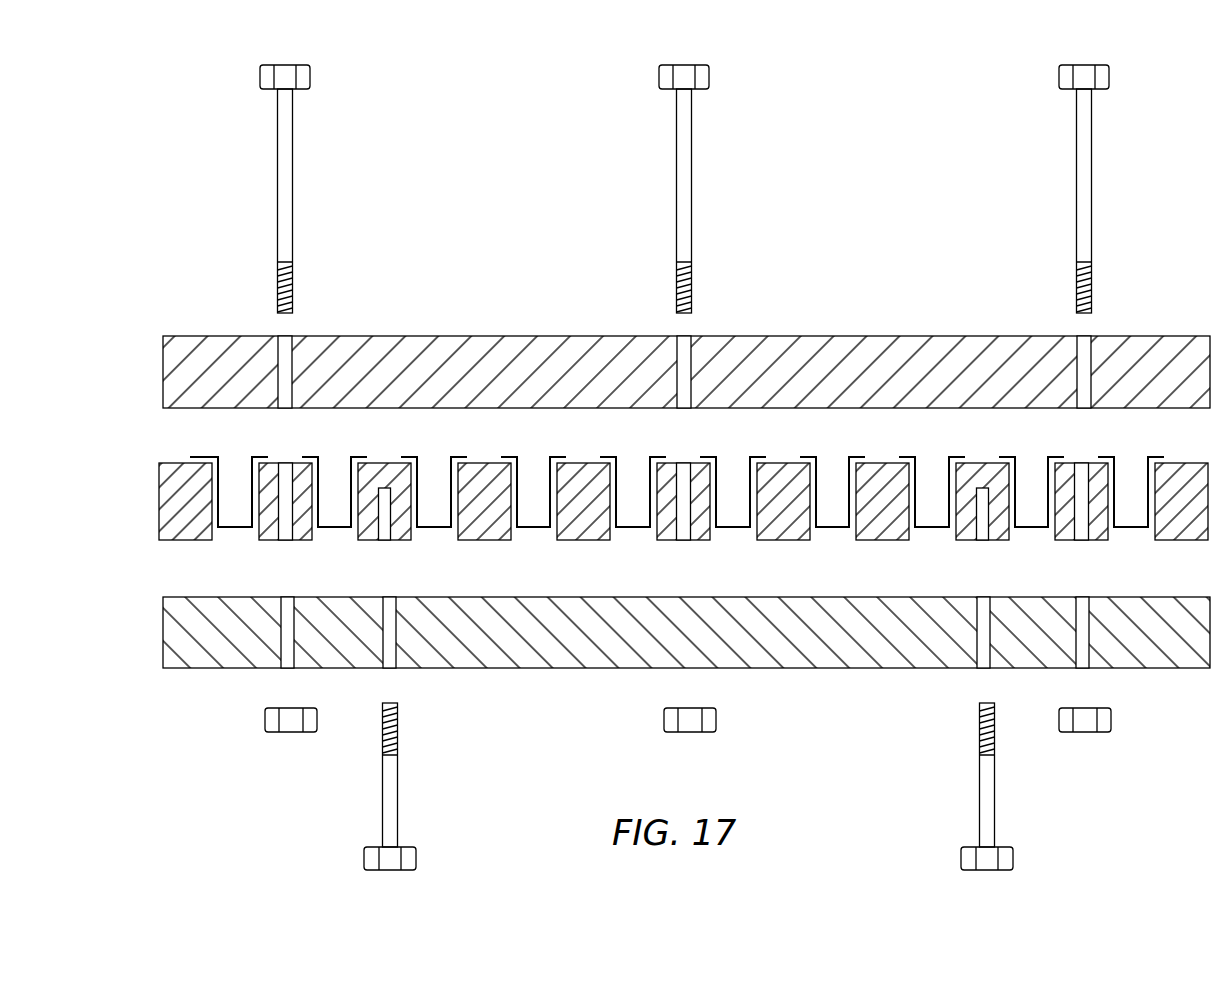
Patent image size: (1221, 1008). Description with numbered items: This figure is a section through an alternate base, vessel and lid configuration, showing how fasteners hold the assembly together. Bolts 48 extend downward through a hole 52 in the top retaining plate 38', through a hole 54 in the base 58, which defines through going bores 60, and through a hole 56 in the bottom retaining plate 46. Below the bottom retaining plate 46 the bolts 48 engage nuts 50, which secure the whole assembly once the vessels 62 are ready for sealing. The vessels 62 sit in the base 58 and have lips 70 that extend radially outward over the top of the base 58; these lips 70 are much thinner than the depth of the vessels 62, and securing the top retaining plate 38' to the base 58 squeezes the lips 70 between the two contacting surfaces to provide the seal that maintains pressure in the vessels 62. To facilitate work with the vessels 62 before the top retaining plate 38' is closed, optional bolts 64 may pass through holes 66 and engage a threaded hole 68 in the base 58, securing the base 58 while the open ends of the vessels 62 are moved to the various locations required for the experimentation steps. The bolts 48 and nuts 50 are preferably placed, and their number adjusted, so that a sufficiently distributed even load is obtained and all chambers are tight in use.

The bolt 48 is at (293, 167).
The top retaining plate 38' is at (674, 357).
The hole in top retaining plate 52 is at (290, 340).
The lip 70 is at (190, 457).
The vessel 62 is at (232, 475).
The through going bore 60 is at (208, 492).
The base 58 is at (167, 527).
The hole in base 54 is at (265, 532).
The threaded hole 68 is at (382, 505).
The bottom retaining plate 46 is at (171, 651).
The hole in bottom retaining plate 56 is at (278, 642).
The hole 66 is at (393, 650).
The nut 50 is at (265, 718).
The optional bolt 64 is at (399, 770).